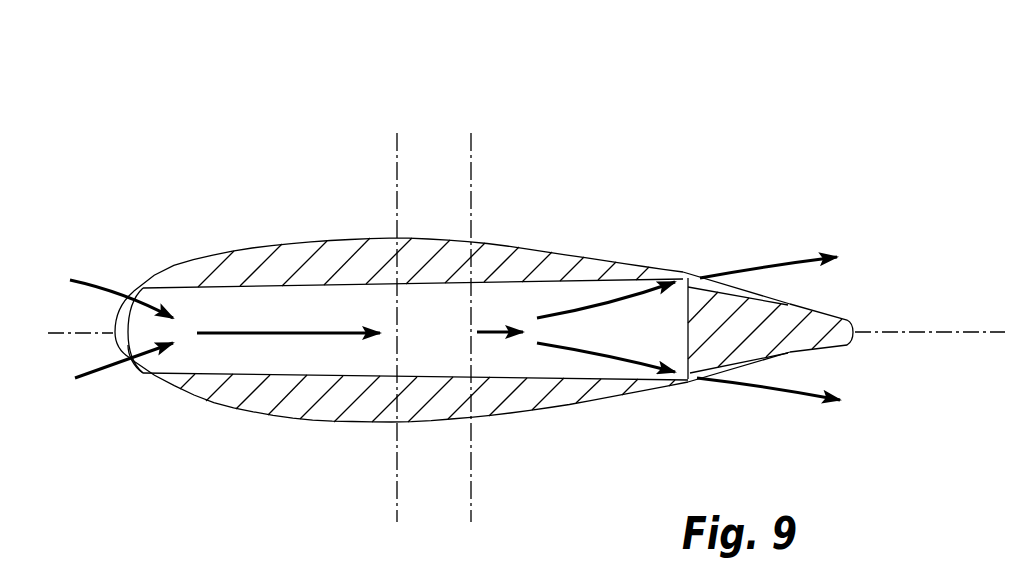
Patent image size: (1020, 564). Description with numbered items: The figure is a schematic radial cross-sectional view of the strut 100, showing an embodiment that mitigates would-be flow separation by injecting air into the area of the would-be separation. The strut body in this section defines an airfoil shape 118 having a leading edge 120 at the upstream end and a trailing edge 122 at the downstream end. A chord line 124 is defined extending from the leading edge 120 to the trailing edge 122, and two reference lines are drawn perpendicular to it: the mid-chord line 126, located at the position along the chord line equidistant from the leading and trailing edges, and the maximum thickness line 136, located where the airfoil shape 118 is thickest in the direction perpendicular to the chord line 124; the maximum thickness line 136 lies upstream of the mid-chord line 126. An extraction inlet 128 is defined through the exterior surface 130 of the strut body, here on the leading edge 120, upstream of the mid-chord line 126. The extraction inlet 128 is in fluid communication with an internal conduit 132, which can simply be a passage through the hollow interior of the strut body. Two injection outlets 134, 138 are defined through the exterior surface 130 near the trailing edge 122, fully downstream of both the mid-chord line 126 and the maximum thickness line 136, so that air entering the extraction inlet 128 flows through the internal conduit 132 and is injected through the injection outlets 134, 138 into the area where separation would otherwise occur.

The strut 100 is at (130, 167).
The leading edge 120 is at (125, 283).
The chord line 124 is at (53, 333).
The extraction inlet 128 is at (122, 367).
The internal conduit 132 is at (442, 335).
The exterior surface 130 is at (411, 418).
The airfoil shape 118 is at (227, 407).
The maximum thickness line 136 is at (395, 147).
The mid-chord line 126 is at (472, 147).
The injection outlet 134 is at (702, 267).
The injection outlet 138 is at (703, 388).
The trailing edge 122 is at (862, 318).